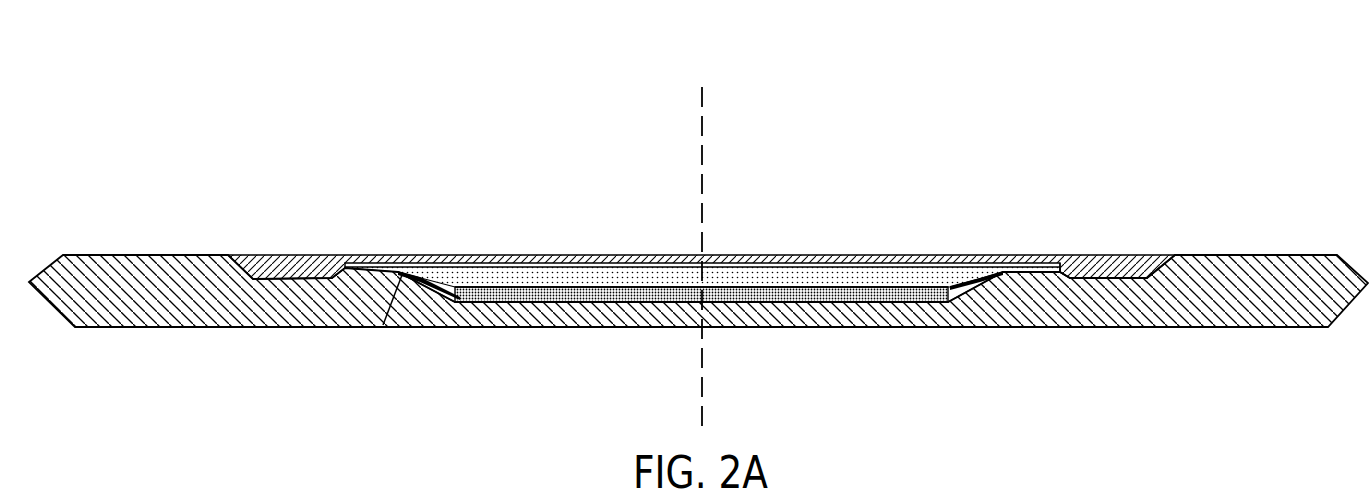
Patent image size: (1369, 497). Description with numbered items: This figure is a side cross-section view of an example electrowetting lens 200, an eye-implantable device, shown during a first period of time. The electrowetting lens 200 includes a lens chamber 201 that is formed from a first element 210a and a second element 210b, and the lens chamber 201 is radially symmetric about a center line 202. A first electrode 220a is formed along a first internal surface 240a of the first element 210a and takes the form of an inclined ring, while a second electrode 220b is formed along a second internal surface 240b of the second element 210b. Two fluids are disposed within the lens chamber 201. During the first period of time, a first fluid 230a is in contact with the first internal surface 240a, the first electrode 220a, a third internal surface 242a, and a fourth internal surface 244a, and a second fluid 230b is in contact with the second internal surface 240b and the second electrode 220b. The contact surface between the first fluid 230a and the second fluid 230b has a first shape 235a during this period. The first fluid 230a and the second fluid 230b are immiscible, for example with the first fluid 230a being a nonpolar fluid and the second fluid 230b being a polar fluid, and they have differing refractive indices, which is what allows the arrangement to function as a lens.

The electrowetting lens 200 is at (1208, 118).
The lens chamber 201 is at (786, 257).
The center line 202 is at (703, 135).
The first element 210a is at (188, 308).
The second element 210b is at (1123, 265).
The first electrode 220a is at (962, 298).
The second electrode 220b is at (948, 262).
The first fluid 230a is at (688, 300).
The second fluid 230b is at (665, 267).
The first shape 235a is at (840, 312).
The first internal surface 240a is at (438, 300).
The second internal surface 240b is at (545, 254).
The third internal surface 242a is at (466, 300).
The fourth internal surface 244a is at (640, 314).